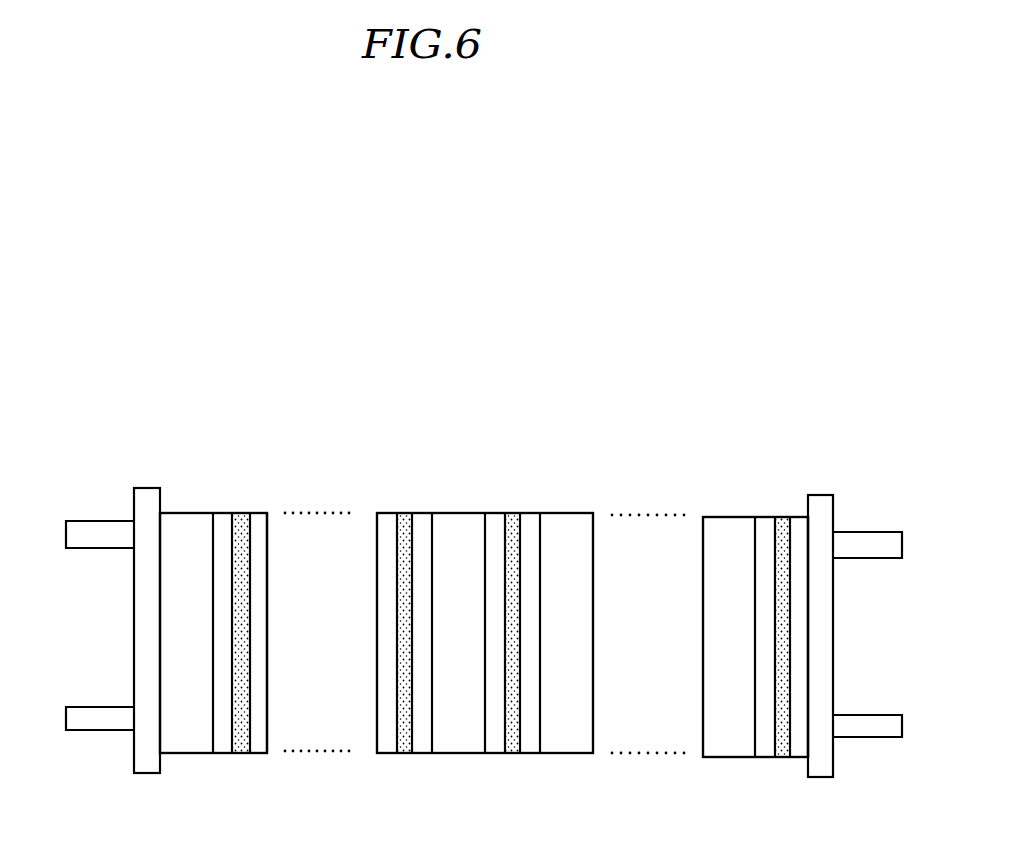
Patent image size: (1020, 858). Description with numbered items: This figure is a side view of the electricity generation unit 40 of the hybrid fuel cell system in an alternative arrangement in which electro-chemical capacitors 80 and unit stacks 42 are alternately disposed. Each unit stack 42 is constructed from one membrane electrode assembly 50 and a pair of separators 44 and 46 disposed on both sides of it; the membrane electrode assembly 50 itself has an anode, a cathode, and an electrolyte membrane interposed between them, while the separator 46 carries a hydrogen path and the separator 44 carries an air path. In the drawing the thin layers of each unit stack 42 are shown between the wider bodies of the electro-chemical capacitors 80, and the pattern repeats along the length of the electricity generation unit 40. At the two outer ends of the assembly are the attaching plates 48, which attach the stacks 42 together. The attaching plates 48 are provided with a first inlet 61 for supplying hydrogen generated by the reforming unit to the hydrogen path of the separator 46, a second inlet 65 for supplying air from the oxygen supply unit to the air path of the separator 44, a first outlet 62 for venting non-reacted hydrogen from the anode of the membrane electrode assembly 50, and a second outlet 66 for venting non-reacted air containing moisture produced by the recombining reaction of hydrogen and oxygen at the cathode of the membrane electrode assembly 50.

The electricity generation unit 40 is at (831, 428).
The stack 42 is at (197, 450).
The separator 44 is at (222, 515).
The separator 46 is at (258, 515).
The attaching plate 48 is at (134, 629).
The membrane electrode assembly 50 is at (239, 515).
The first inlet 61 is at (85, 521).
The first outlet 62 is at (883, 738).
The second inlet 65 is at (90, 731).
The second outlet 66 is at (882, 532).
The electro-chemical capacitor 80 is at (189, 740).